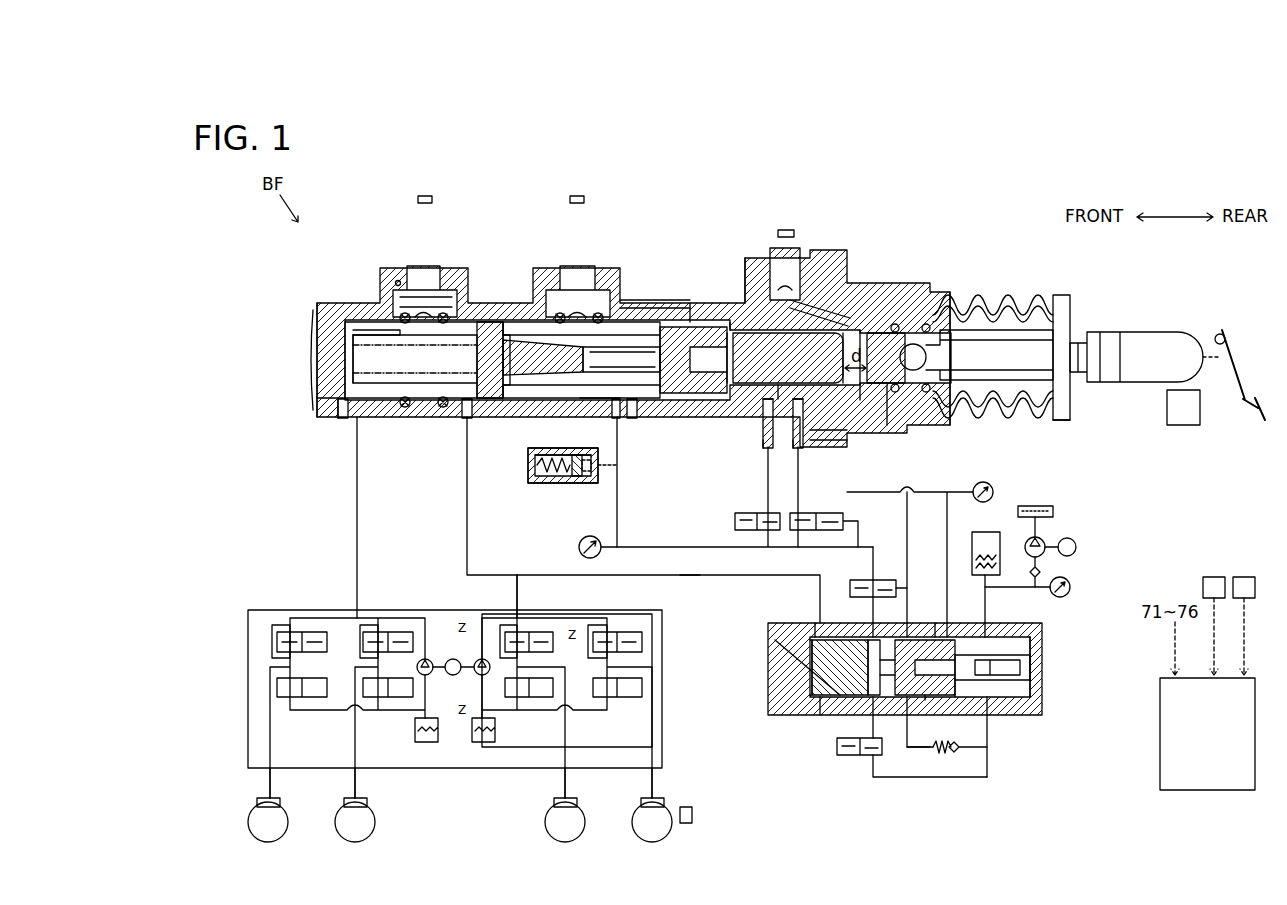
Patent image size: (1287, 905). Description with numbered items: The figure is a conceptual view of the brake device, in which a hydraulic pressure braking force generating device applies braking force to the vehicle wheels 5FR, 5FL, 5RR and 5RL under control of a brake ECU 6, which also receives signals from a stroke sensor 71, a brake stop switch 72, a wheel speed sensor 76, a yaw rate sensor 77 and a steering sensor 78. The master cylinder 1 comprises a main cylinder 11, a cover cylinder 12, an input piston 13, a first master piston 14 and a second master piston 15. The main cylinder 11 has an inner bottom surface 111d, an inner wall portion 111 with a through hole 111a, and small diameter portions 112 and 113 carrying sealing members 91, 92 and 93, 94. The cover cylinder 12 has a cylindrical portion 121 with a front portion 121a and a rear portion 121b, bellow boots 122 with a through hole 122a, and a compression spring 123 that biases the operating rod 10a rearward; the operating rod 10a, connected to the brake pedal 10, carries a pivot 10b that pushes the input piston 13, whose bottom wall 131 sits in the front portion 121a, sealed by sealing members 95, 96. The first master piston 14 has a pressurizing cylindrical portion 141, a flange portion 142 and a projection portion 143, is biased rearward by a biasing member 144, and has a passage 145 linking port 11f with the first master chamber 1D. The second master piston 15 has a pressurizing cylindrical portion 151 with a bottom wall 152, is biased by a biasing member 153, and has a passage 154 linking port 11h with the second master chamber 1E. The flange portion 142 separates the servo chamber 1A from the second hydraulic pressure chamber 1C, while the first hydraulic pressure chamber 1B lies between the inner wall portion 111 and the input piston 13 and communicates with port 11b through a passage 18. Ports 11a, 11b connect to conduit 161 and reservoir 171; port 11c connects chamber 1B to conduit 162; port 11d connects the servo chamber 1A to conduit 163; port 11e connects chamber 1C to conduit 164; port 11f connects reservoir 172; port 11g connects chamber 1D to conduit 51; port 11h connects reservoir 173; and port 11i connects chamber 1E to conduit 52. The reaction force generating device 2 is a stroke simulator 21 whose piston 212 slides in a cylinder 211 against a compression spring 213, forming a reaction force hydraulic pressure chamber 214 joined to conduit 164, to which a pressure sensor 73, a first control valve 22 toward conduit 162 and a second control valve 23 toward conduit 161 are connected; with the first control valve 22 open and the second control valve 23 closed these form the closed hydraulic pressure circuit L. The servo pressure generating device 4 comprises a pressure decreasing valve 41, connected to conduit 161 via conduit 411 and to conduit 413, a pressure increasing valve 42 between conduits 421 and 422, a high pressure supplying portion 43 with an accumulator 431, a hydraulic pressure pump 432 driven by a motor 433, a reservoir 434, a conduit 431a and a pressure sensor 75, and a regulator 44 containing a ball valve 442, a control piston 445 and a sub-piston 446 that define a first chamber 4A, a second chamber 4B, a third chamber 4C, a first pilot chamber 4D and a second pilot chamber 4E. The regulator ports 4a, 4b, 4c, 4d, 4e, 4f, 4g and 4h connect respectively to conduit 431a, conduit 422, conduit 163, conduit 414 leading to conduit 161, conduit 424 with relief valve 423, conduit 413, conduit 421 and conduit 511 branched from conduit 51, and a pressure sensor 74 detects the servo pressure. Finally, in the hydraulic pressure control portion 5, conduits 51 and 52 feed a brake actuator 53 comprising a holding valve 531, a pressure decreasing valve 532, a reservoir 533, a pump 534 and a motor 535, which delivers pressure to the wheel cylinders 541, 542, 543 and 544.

The master cylinder 1 is at (294, 312).
The main cylinder 11 is at (337, 310).
The inner bottom surface 111d is at (322, 402).
The port 11i is at (342, 417).
The second master chamber 1E is at (370, 399).
The biasing member 153 is at (365, 340).
The pressurizing cylindrical portion 151 is at (415, 400).
The small diameter portion 113 is at (452, 400).
The sealing member 94 is at (398, 303).
The sealing member 93 is at (443, 303).
The passage 154 is at (422, 282).
The port 11h is at (430, 300).
The reservoir 173 is at (425, 268).
The reservoir 172 is at (577, 268).
The reservoir 171 is at (786, 250).
The sealing member 92 is at (557, 305).
The sealing member 91 is at (598, 300).
The port 11f is at (573, 300).
The pressurizing cylindrical portion 141 is at (633, 320).
The flange portion 142 is at (668, 320).
The through hole 111a is at (735, 322).
The inner wall portion 111 is at (745, 320).
The port 11b is at (805, 268).
The projection portion 143 is at (838, 330).
The port 11e is at (635, 417).
The conduit 164 is at (618, 420).
The port 11g is at (468, 420).
The port 11d is at (765, 420).
The port 11c is at (783, 420).
The port 11a is at (798, 420).
The conduit 163 is at (740, 470).
The conduit 162 is at (770, 470).
The conduit 161 is at (800, 478).
The first hydraulic pressure chamber 1B is at (860, 383).
The front portion 121a is at (868, 400).
The rear portion 121b is at (900, 415).
The cylindrical portion 121 is at (985, 492).
The cover cylinder 12 is at (1060, 496).
The second master piston 15 is at (492, 345).
The bottom wall 152 is at (472, 390).
The passage 145 is at (520, 345).
The biasing member 144 is at (482, 333).
The first master chamber 1D is at (578, 410).
The servo chamber 1A is at (615, 390).
The first master piston 14 is at (635, 420).
The second hydraulic pressure chamber 1C is at (691, 388).
The small diameter portion 112 is at (600, 455).
The passage 18 is at (860, 335).
The sealing member 95 is at (892, 335).
The sealing member 96 is at (922, 335).
The bottom wall 131 is at (905, 345).
The input piston 13 is at (918, 358).
The pivot 10b is at (1020, 345).
The boots 122 is at (1040, 415).
The compression spring 123 is at (1060, 415).
The through hole 122a is at (1068, 345).
The operating rod 10a is at (1047, 320).
The brake pedal 10 is at (1228, 332).
The brake stop switch 72 is at (1220, 334).
The stroke sensor 71 is at (1182, 425).
The reaction force generating device 2 is at (543, 537).
The stroke simulator 21 is at (545, 448).
The cylinder 211 is at (565, 448).
The compression spring 213 is at (540, 480).
The piston 212 is at (562, 483).
The reaction force hydraulic pressure chamber 214 is at (585, 483).
The conduit 52 is at (357, 545).
The conduit 51 is at (467, 532).
The conduit 511 is at (540, 575).
The hydraulic pressure circuit L is at (683, 583).
The pressure sensor 73 is at (592, 537).
The first control valve 22 is at (750, 513).
The second control valve 23 is at (795, 513).
The conduit 411 is at (873, 547).
The pressure decreasing valve 41 is at (852, 580).
The conduit 414 is at (907, 545).
The pressure sensor 74 is at (975, 497).
The hydraulic pressure pump 432 is at (1010, 527).
The accumulator 431 is at (980, 575).
The conduit 431a is at (995, 590).
The pressure sensor 75 is at (1068, 597).
The high pressure supplying portion 43 is at (1105, 548).
The reservoir 434 is at (1053, 512).
The motor 433 is at (1045, 545).
The servo pressure generating device 4 is at (1061, 646).
The first pilot chamber 4D is at (812, 665).
The second pilot chamber 4E is at (810, 650).
The third chamber 4C is at (810, 685).
The second chamber 4B is at (945, 612).
The first chamber 4A is at (1030, 668).
The regulator 44 is at (1040, 700).
The port 4h is at (818, 625).
The conduit 413 is at (873, 625).
The port 4f is at (902, 628).
The port 4d is at (935, 625).
The port 4c is at (970, 615).
The port 4a is at (990, 630).
The sub-piston 446 is at (825, 700).
The conduit 421 is at (870, 735).
The port 4g is at (890, 715).
The port 4e is at (925, 700).
The control piston 445 is at (950, 700).
The port 4b is at (1000, 715).
The ball valve 442 is at (990, 715).
The pressure increasing valve 42 is at (840, 755).
The conduit 422 is at (892, 777).
The conduit 424 is at (905, 750).
The relief valve 423 is at (945, 752).
The hydraulic pressure control portion 5 is at (290, 572).
The brake actuator 53 is at (438, 612).
The holding valve 531 is at (618, 620).
The pressure decreasing valve 532 is at (612, 713).
The pump 534 is at (475, 660).
The motor 535 is at (475, 680).
The reservoir 533 is at (495, 735).
The wheel cylinder 541 is at (275, 803).
The wheel cylinder 542 is at (368, 803).
The wheel cylinder 543 is at (575, 803).
The wheel cylinder 544 is at (662, 803).
The vehicle wheel 5FR is at (258, 835).
The vehicle wheel 5FL is at (368, 838).
The vehicle wheel 5RR is at (578, 838).
The vehicle wheel 5RL is at (665, 838).
The wheel speed sensor 76 is at (692, 818).
The brake ECU 6 is at (1240, 678).
The yaw rate sensor 77 is at (1213, 577).
The steering sensor 78 is at (1244, 577).